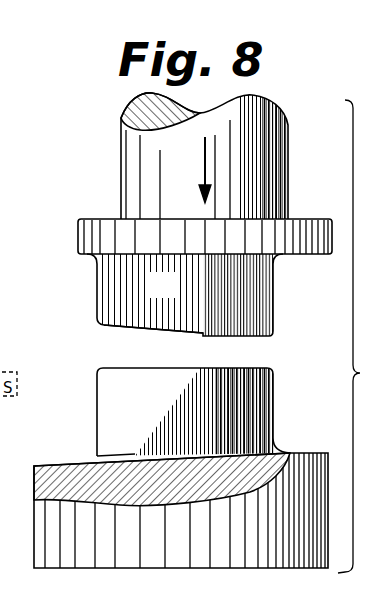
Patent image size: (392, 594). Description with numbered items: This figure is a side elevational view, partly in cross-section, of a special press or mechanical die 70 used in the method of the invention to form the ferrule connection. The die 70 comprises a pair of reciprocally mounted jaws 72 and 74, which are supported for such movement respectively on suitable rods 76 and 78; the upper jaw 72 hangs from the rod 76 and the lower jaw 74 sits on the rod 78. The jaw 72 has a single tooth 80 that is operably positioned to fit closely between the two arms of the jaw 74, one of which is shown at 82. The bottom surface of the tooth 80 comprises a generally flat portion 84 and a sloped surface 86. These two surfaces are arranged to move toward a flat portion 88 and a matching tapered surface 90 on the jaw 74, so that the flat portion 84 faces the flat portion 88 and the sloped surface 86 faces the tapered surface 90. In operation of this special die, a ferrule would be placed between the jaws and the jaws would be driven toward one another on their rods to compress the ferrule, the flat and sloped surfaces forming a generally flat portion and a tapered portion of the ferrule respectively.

The mechanical die 70 is at (309, 84).
The jaw 72 is at (92, 284).
The jaw 74 is at (90, 389).
The rod 76 is at (290, 185).
The rod 78 is at (34, 516).
The tooth 80 is at (178, 295).
The arm 82 is at (143, 405).
The flat portion 84 is at (205, 340).
The sloped surface 86 is at (118, 327).
The flat portion 88 is at (258, 451).
The tapered surface 90 is at (130, 457).